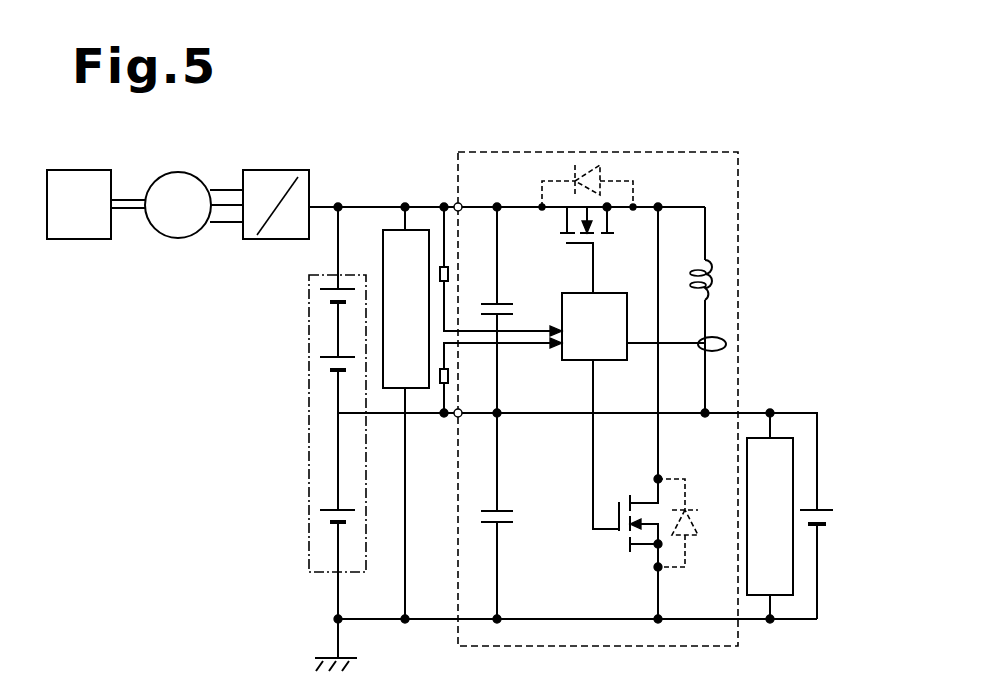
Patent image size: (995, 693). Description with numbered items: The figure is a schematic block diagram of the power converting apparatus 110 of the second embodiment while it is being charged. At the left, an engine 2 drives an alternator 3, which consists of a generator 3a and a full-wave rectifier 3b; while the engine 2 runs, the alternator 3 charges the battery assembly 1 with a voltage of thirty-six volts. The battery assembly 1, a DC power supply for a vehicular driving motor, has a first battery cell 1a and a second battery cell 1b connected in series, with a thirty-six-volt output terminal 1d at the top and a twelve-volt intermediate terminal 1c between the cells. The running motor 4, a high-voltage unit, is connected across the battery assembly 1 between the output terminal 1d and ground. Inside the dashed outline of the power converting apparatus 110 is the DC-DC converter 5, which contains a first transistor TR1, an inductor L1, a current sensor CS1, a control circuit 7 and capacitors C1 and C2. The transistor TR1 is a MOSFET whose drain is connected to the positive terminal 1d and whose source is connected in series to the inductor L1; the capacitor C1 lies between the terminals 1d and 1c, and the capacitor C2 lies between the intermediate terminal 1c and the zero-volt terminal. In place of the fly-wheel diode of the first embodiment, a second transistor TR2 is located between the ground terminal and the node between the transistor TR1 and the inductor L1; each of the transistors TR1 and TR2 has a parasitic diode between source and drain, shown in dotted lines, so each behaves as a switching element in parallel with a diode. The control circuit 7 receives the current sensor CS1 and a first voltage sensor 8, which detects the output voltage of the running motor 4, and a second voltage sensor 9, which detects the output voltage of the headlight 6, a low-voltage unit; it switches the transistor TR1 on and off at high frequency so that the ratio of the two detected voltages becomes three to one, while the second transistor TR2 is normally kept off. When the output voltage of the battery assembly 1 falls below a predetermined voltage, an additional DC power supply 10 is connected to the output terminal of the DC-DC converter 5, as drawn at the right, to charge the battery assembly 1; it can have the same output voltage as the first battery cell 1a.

The battery assembly 1 is at (300, 379).
The first battery cell 1a is at (338, 545).
The second battery cell 1b is at (338, 335).
The intermediate terminal 1c is at (335, 413).
The output terminal 1d is at (340, 200).
The engine 2 is at (87, 240).
The alternator 3 is at (248, 289).
The generator 3a is at (178, 238).
The full-wave rectifier 3b is at (262, 240).
The running motor 4 is at (383, 247).
The DC-DC converter 5 is at (755, 226).
The headlight 6 is at (794, 470).
The control circuit 7 is at (606, 361).
The first voltage sensor 8 is at (449, 274).
The second voltage sensor 9 is at (449, 376).
The additional DC power supply 10 is at (827, 505).
The power converting apparatus 110 is at (732, 128).
The capacitor C1 is at (500, 304).
The capacitor C2 is at (500, 511).
The inductor L1 is at (708, 262).
The current sensor CS1 is at (728, 344).
The first transistor TR1 is at (570, 229).
The second transistor TR2 is at (647, 413).